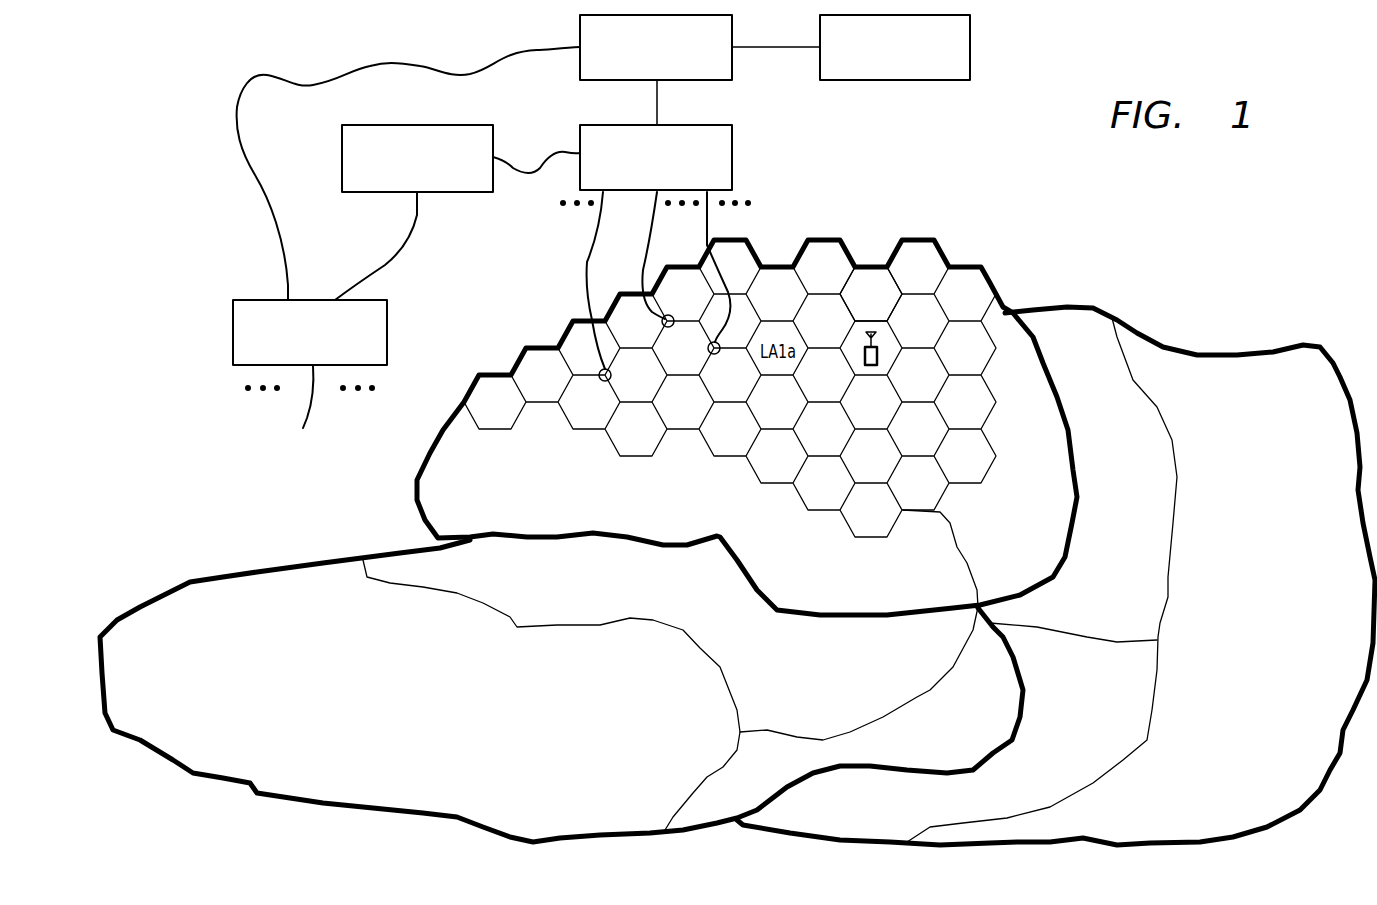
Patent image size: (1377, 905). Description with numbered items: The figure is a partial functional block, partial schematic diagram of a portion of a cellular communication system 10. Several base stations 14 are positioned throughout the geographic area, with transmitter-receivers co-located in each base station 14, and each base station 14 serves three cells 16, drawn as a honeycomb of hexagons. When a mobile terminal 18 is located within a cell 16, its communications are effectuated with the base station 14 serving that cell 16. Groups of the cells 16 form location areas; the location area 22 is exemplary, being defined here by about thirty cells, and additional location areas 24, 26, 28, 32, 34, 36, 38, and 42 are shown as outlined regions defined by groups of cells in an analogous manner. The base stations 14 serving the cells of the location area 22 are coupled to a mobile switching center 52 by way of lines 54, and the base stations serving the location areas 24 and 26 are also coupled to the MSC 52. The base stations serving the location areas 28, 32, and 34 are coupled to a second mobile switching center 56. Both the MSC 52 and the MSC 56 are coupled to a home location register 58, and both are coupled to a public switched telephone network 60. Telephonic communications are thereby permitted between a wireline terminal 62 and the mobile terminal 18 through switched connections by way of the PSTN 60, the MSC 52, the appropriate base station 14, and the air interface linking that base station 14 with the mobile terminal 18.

The cellular communication system 10 is at (1084, 210).
The base station 14 is at (671, 316).
The cell 16 is at (822, 257).
The mobile terminal 18 is at (879, 357).
The location area 22 is at (885, 306).
The location area 24 is at (565, 505).
The location area 26 is at (1025, 557).
The location area 28 is at (835, 701).
The location area 32 is at (456, 724).
The location area 34 is at (983, 751).
The location area 36 is at (1089, 739).
The location area 38 is at (1130, 587).
The location area 42 is at (1287, 634).
The mobile switching center 52 is at (733, 153).
The lines 54 is at (758, 225).
The mobile switching center 56 is at (233, 335).
The home location register 58 is at (342, 155).
The public switched telephone network 60 is at (580, 32).
The wireline terminal 62 is at (972, 38).